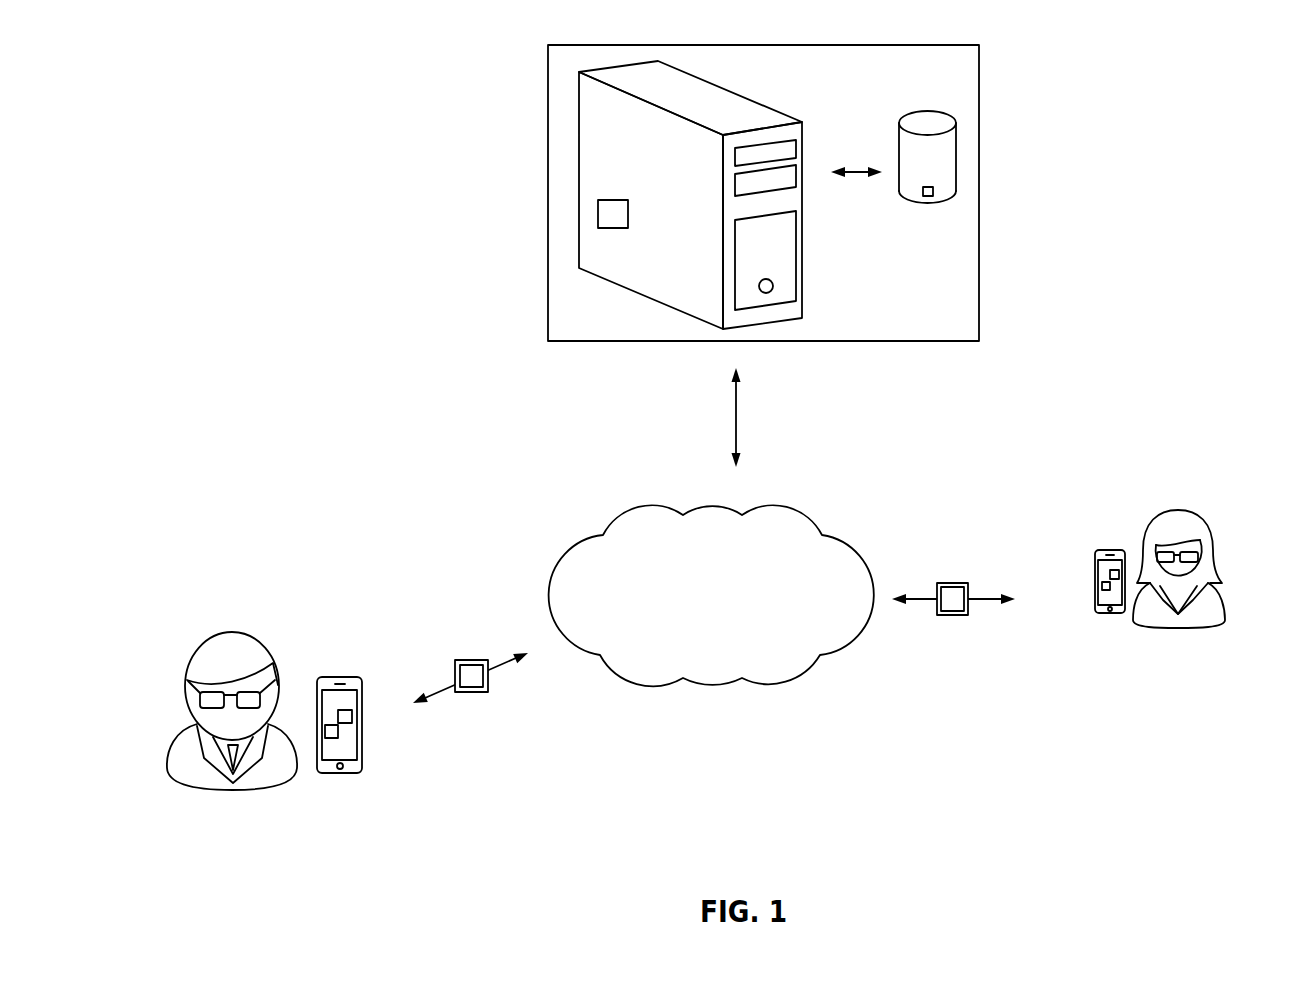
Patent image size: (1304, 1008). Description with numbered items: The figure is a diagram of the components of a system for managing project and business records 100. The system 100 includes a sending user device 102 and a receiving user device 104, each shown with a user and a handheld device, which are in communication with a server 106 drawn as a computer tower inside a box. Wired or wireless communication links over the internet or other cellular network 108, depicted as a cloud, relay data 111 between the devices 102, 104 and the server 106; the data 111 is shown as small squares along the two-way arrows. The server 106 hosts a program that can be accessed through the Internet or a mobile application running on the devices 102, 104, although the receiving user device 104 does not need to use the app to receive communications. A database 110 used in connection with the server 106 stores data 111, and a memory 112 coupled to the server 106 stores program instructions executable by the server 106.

The system for managing project and business records 100 is at (1178, 37).
The sending user device 102 is at (362, 762).
The receiving user device 104 is at (1110, 613).
The server 106 is at (578, 125).
The internet or other cellular network 108 is at (735, 610).
The database 110 is at (942, 160).
The data 111 is at (933, 190).
The memory 112 is at (608, 213).